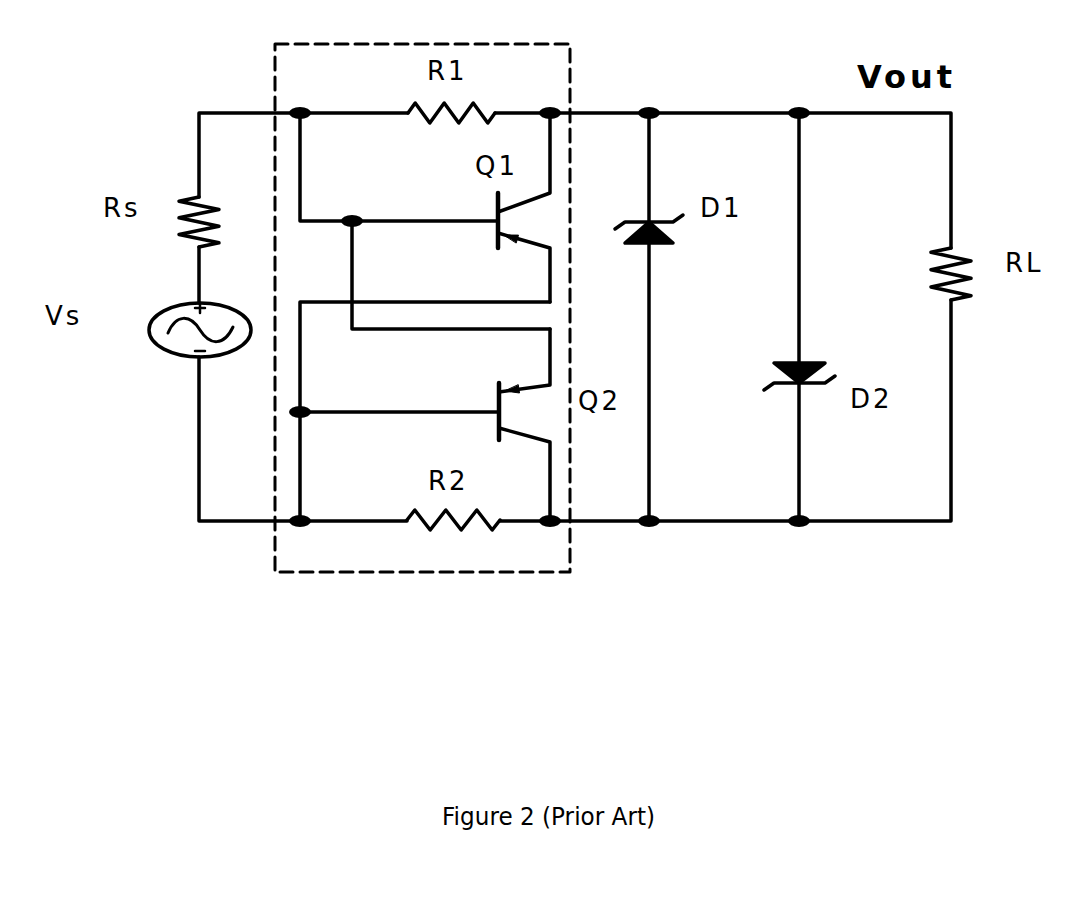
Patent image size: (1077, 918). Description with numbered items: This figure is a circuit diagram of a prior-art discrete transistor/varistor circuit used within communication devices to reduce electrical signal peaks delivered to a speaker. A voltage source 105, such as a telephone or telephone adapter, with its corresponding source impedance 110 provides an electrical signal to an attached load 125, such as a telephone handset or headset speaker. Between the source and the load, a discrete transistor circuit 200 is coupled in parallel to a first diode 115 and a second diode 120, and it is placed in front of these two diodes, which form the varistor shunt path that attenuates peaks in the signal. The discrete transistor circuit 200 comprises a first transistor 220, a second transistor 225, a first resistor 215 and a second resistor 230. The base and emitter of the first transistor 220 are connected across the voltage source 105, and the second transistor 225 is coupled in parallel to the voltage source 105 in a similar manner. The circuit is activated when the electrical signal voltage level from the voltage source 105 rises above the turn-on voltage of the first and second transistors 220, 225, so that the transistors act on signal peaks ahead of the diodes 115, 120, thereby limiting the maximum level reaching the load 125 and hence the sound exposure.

The voltage source 105 is at (175, 303).
The source impedance 110 is at (193, 196).
The first diode 115 is at (645, 218).
The second diode 120 is at (817, 352).
The load 125 is at (973, 252).
The discrete transistor circuit 200 is at (513, 43).
The first resistor 215 is at (477, 98).
The first transistor 220 is at (495, 213).
The second transistor 225 is at (498, 388).
The second resistor 230 is at (417, 511).